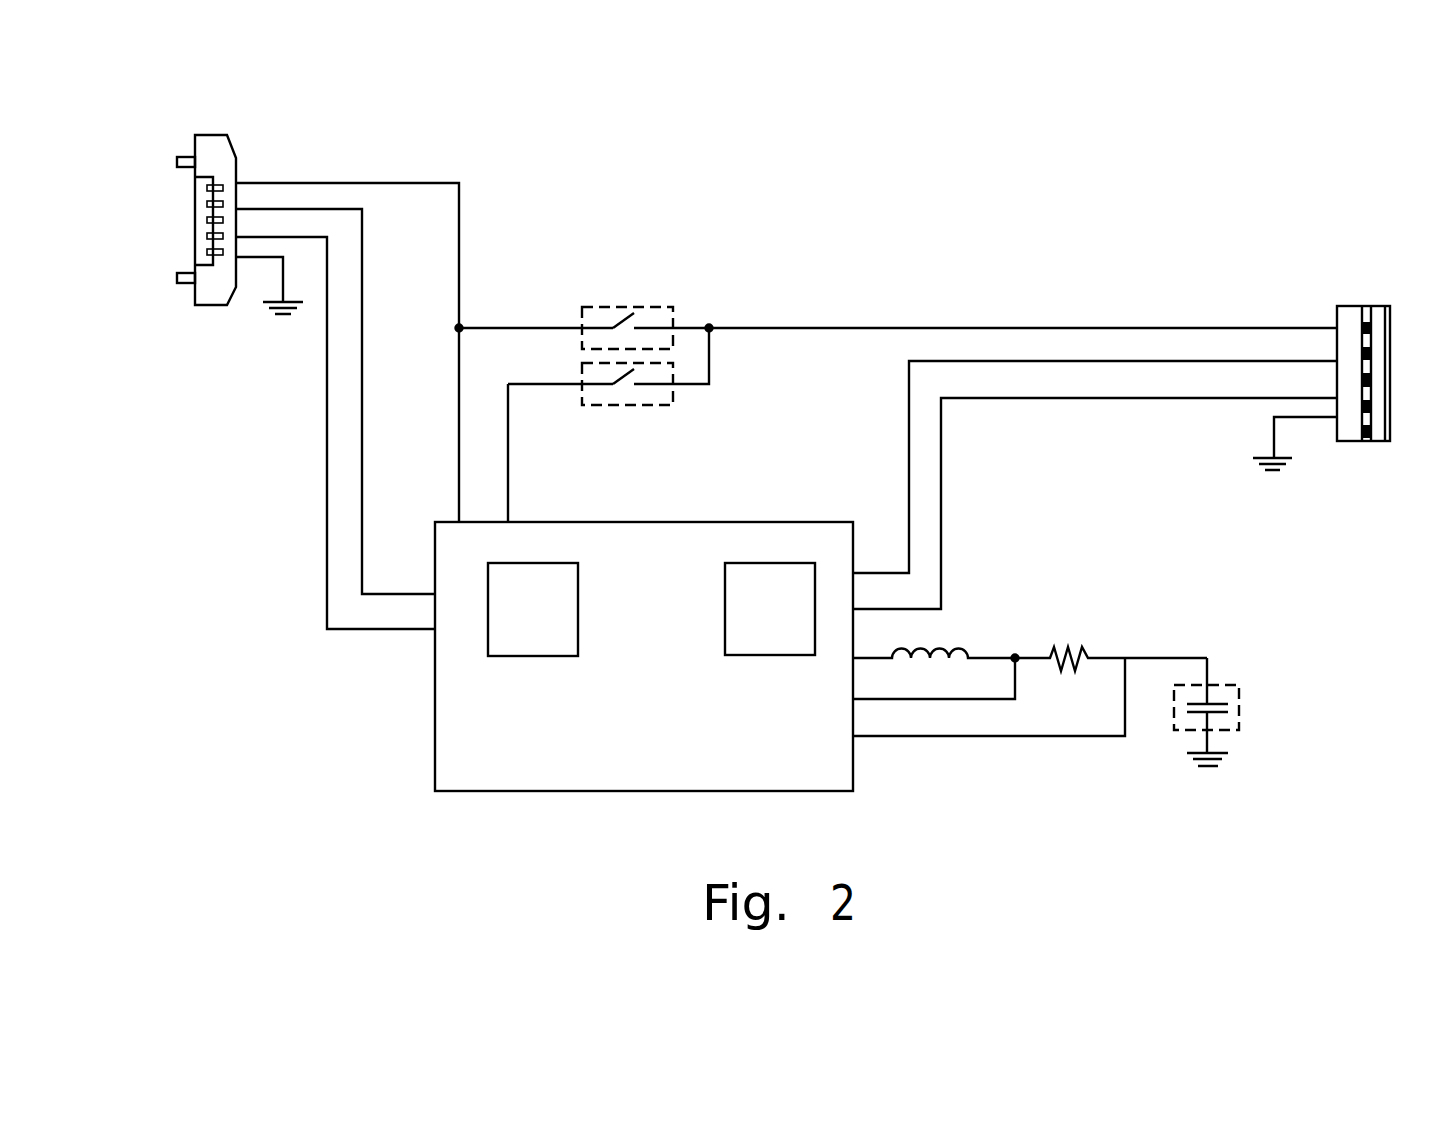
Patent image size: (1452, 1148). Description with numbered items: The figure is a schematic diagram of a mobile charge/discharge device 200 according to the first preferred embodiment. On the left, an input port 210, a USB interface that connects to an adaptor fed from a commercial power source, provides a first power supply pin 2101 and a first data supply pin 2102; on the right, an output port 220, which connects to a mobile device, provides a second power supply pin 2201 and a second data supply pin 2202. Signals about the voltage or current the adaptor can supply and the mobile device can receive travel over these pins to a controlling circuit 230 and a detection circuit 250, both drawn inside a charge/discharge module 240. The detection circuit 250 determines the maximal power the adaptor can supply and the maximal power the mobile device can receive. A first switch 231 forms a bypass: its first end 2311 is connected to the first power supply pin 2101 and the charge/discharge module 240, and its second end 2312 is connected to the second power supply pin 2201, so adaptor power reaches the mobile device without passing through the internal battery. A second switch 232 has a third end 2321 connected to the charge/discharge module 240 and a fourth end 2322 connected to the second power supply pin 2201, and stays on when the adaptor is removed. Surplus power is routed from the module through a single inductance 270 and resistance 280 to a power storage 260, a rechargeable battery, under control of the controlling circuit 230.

The mobile charge/discharge device 200 is at (190, 98).
The input port 210 is at (207, 306).
The first power supply pin 2101 is at (236, 183).
The first data supply pin 2102 is at (236, 209).
The output port 220 is at (1375, 306).
The second power supply pin 2201 is at (1337, 323).
The second data supply pin 2202 is at (1337, 361).
The controlling circuit 230 is at (527, 656).
The first switch 231 is at (604, 276).
The first end 2311 is at (582, 328).
The second end 2312 is at (673, 328).
The second switch 232 is at (635, 425).
The third end 2321 is at (582, 385).
The fourth end 2322 is at (673, 384).
The charge/discharge module 240 is at (655, 707).
The detection circuit 250 is at (772, 655).
The power storage 260 is at (1239, 705).
The inductance 270 is at (963, 648).
The resistance 280 is at (1088, 650).